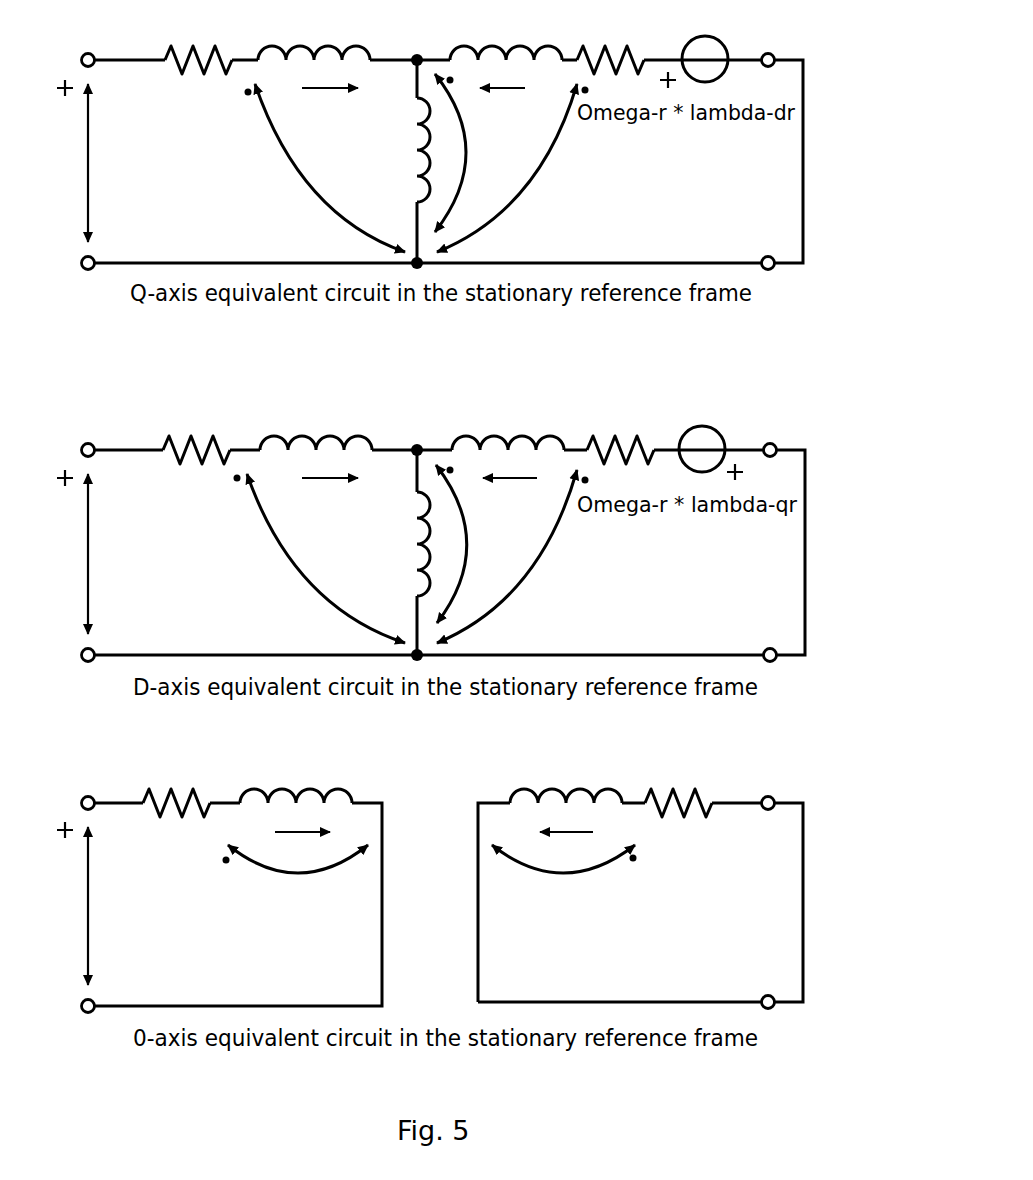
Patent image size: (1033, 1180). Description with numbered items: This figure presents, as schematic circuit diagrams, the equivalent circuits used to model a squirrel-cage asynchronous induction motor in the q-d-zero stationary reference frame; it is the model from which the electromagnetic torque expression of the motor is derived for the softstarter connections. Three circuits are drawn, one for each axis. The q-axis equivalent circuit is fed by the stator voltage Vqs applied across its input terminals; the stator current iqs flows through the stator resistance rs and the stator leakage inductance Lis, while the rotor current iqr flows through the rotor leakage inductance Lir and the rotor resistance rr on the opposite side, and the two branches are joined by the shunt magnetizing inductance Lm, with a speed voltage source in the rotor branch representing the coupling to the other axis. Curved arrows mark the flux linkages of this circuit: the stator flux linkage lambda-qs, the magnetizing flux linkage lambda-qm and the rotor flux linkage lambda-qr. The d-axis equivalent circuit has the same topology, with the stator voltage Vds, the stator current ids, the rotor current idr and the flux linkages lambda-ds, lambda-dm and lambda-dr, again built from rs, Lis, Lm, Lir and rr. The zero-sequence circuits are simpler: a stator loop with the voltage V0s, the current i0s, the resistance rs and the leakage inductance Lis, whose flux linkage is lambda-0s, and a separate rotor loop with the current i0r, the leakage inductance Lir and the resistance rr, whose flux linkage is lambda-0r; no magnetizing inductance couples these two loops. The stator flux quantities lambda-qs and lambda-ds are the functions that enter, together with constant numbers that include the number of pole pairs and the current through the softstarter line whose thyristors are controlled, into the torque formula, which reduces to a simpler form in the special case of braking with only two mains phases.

The stator resistance rs is at (187, 413).
The stator leakage inductance Lis is at (306, 406).
The rotor leakage inductance Lir is at (536, 406).
The rotor resistance rr is at (644, 412).
The magnetizing inductance Lm is at (403, 347).
The q-axis stator voltage Vqs is at (68, 161).
The d-axis stator voltage Vds is at (66, 552).
The zero-axis stator voltage V0s is at (65, 903).
The q-axis stator current iqs is at (330, 106).
The q-axis rotor current iqr is at (502, 106).
The d-axis stator current ids is at (330, 496).
The d-axis rotor current idr is at (510, 493).
The zero-axis stator current i0s is at (302, 849).
The zero-axis rotor current i0r is at (566, 849).
The q-axis stator flux lambda-qs is at (300, 168).
The q-axis magnetizing flux linkage lambda-qm is at (474, 150).
The q-axis rotor flux linkage lambda-qr is at (540, 168).
The d-axis stator flux lambda-ds is at (302, 558).
The d-axis magnetizing flux linkage lambda-dm is at (479, 542).
The d-axis rotor flux linkage lambda-dr is at (544, 556).
The zero-axis stator flux linkage lambda-0s is at (296, 877).
The zero-axis rotor flux linkage lambda-0r is at (564, 872).